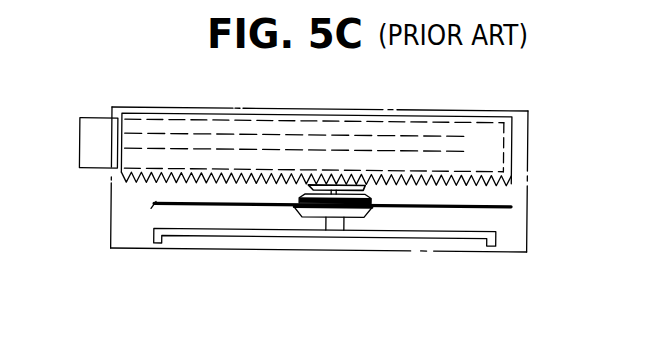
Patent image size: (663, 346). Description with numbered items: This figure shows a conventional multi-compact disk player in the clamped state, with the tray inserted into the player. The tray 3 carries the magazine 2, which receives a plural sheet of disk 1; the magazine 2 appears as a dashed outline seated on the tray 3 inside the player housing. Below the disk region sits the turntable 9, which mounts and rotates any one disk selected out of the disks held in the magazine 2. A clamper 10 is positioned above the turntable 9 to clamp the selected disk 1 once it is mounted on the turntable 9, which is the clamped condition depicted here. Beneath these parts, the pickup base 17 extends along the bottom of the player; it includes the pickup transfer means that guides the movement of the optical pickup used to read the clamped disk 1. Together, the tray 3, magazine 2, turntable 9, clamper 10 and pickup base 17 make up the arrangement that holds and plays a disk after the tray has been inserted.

The disk 1 is at (152, 204).
The magazine 2 is at (90, 126).
The tray 3 is at (505, 153).
The turntable 9 is at (360, 215).
The clamper 10 is at (311, 185).
The pickup base 17 is at (458, 232).